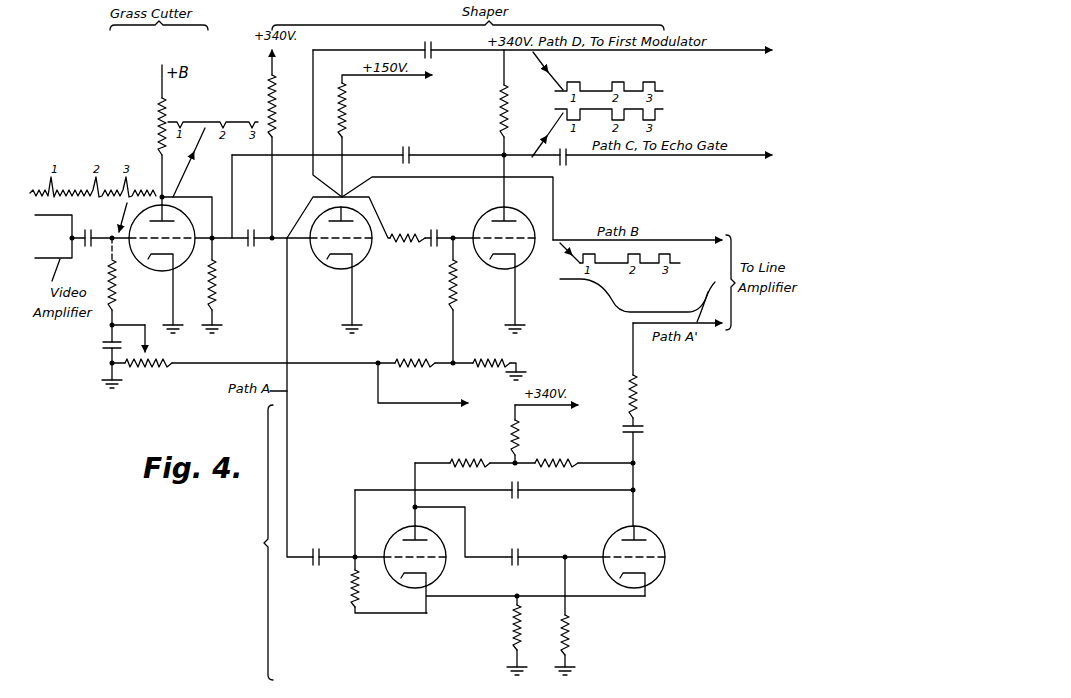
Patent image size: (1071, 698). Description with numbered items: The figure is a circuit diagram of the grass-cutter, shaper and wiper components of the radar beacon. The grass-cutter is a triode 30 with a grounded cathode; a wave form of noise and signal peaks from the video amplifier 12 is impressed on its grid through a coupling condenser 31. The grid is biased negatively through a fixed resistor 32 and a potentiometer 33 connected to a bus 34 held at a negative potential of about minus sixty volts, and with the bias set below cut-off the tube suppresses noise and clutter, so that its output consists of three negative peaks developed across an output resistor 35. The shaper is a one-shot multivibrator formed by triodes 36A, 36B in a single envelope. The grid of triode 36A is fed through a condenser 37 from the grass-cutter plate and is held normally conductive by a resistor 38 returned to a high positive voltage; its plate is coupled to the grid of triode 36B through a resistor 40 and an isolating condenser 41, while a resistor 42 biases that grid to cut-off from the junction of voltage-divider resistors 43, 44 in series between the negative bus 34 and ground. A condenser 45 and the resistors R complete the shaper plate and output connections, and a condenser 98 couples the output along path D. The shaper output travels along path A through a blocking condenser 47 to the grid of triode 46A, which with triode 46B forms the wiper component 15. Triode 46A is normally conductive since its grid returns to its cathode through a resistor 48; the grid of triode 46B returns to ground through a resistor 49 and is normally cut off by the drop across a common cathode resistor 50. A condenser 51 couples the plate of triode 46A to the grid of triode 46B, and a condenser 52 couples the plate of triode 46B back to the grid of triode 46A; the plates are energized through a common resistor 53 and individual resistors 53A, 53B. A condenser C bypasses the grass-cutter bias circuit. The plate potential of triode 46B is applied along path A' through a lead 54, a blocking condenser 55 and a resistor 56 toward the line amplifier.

The video amplifier 12 is at (57, 217).
The wiper component 15 is at (244, 542).
The triode 30 is at (191, 206).
The coupling condenser 31 is at (89, 229).
The fixed resistor 32 is at (116, 290).
The potentiometer 33 is at (150, 361).
The bus 34 is at (379, 405).
The output resistor 35 is at (217, 292).
The triode 36A is at (364, 264).
The triode 36B is at (528, 264).
The condenser 37 is at (250, 247).
The resistor 38 is at (268, 98).
The resistor 40 is at (413, 234).
The isolating condenser 41 is at (434, 234).
The resistor 42 is at (449, 291).
The voltage-divider resistor 43 is at (419, 359).
The voltage-divider resistor 44 is at (494, 359).
The coupling capacitor to path C 45 is at (407, 147).
The triode 46A is at (401, 530).
The triode 46B is at (654, 536).
The blocking condenser 47 is at (318, 550).
The resistor 48 is at (351, 591).
The resistor 49 is at (570, 641).
The common cathode resistor 50 is at (512, 634).
The condenser 51 is at (518, 550).
The condenser 52 is at (518, 484).
The common resistor 53 is at (519, 431).
The resistor 53A is at (471, 461).
The resistor 53B is at (568, 461).
The lead 54 is at (635, 461).
The blocking condenser 55 is at (643, 432).
The resistor 56 is at (637, 398).
The coupling capacitor to path D 98 is at (425, 48).
The bypass capacitor C is at (102, 345).
The plate load resistor R is at (350, 110).